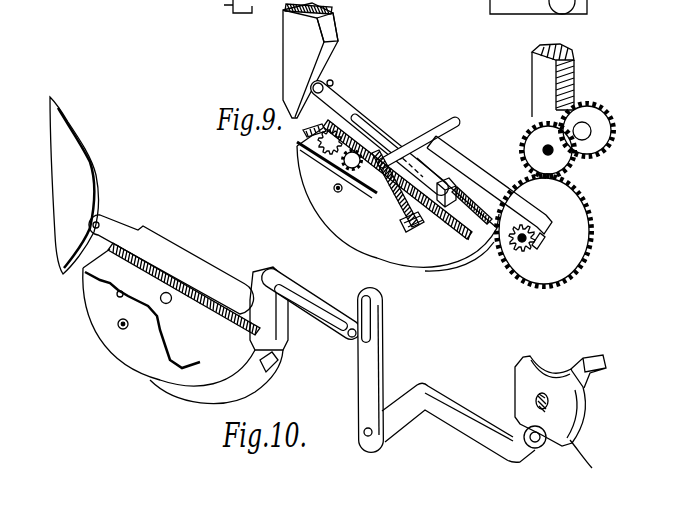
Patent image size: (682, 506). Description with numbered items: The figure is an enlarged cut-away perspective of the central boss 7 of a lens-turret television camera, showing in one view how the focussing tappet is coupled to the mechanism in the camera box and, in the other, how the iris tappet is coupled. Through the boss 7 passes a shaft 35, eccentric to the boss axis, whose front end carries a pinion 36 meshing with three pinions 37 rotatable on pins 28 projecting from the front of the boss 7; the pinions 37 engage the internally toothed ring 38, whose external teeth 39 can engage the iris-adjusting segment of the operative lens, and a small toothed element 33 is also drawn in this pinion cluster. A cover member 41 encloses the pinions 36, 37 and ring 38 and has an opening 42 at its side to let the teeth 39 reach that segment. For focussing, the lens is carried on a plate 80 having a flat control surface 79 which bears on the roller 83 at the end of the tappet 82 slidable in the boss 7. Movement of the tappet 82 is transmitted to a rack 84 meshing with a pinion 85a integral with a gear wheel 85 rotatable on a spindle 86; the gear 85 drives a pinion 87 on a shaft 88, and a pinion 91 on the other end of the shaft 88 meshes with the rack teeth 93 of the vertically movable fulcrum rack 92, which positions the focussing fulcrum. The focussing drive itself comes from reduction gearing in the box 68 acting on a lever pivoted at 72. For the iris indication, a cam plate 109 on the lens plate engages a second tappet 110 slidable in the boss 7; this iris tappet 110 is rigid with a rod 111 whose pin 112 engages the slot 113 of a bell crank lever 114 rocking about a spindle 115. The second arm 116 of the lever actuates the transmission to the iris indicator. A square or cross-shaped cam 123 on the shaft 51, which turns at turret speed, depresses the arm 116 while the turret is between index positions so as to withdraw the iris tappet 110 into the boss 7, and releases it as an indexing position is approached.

In FIG. 9, the boss 7 is at (415, 257).
In FIG. 10, the boss 7 is at (188, 397).
In FIG. 9, the pins 28 is at (376, 192).
In FIG. 9, the ratchet wheel 33 is at (302, 150).
In FIG. 9, the shaft 35 is at (430, 128).
In FIG. 9, the pinion 36 is at (378, 140).
In FIG. 9, the pinions 37 is at (375, 200).
In FIG. 9, the ring 38 is at (417, 224).
In FIG. 9, the teeth 39 is at (305, 140).
In FIG. 9, the cover member 41 is at (330, 220).
In FIG. 10, the cover member 41 is at (115, 358).
In FIG. 10, the opening 42 is at (97, 268).
In FIG. 10, the shaft 51 is at (592, 358).
In FIG. 9, the box 68 is at (519, 14).
In FIG. 9, the pivot 72 is at (229, 7).
In FIG. 9, the control surface 79 is at (327, 63).
In FIG. 9, the plate 80 is at (316, 31).
In FIG. 9, the tappet 82 is at (372, 106).
In FIG. 9, the roller 83 is at (333, 83).
In FIG. 9, the rack 84 is at (467, 158).
In FIG. 9, the gear wheel 85 is at (572, 280).
In FIG. 9, the pinion 85a is at (544, 240).
In FIG. 9, the spindle 86 is at (518, 250).
In FIG. 9, the pinion 87 is at (569, 170).
In FIG. 9, the shaft 88 is at (590, 126).
In FIG. 9, the pinion 91 is at (600, 152).
In FIG. 9, the fulcrum rack 92 is at (532, 72).
In FIG. 9, the rack teeth 93 is at (571, 72).
In FIG. 10, the cam plate 109 is at (88, 174).
In FIG. 10, the iris tappet 110 is at (166, 244).
In FIG. 10, the rod 111 is at (290, 282).
In FIG. 10, the pin 112 is at (351, 338).
In FIG. 10, the slot 113 is at (375, 306).
In FIG. 10, the bell crank lever 114 is at (382, 364).
In FIG. 10, the spindle 115 is at (368, 437).
In FIG. 10, the second arm 116 is at (462, 428).
In FIG. 10, the cam 123 is at (572, 410).